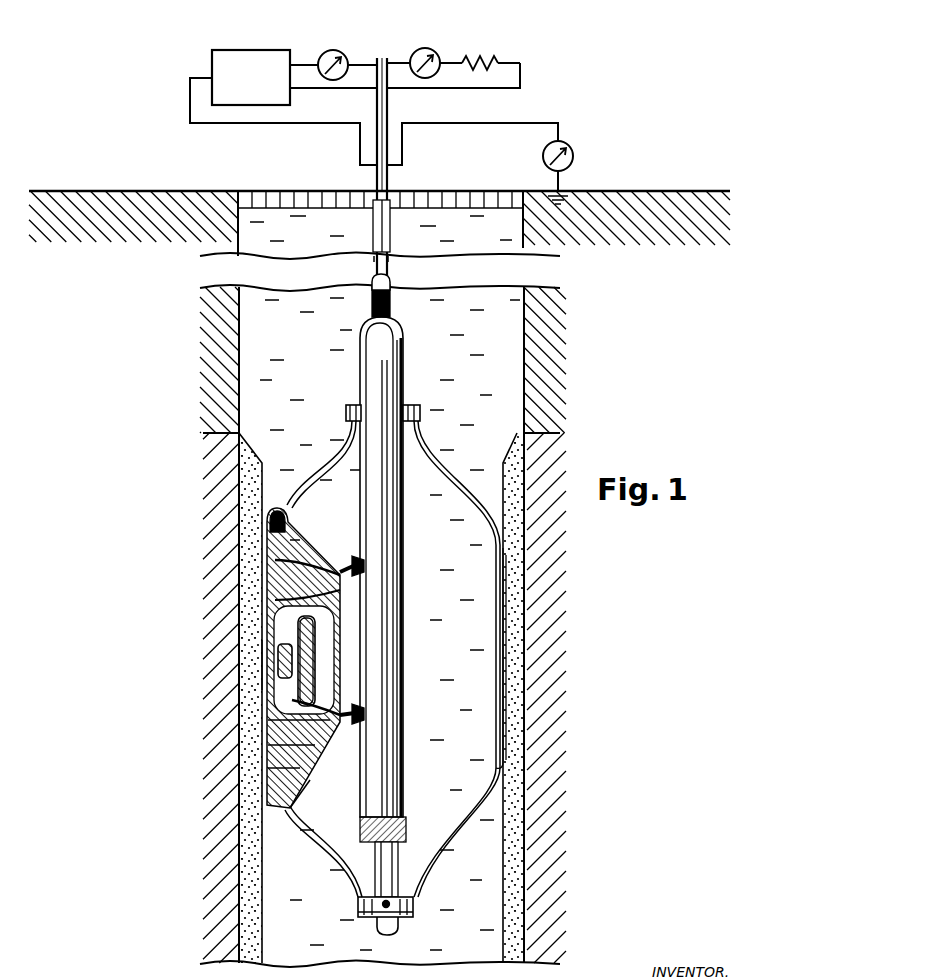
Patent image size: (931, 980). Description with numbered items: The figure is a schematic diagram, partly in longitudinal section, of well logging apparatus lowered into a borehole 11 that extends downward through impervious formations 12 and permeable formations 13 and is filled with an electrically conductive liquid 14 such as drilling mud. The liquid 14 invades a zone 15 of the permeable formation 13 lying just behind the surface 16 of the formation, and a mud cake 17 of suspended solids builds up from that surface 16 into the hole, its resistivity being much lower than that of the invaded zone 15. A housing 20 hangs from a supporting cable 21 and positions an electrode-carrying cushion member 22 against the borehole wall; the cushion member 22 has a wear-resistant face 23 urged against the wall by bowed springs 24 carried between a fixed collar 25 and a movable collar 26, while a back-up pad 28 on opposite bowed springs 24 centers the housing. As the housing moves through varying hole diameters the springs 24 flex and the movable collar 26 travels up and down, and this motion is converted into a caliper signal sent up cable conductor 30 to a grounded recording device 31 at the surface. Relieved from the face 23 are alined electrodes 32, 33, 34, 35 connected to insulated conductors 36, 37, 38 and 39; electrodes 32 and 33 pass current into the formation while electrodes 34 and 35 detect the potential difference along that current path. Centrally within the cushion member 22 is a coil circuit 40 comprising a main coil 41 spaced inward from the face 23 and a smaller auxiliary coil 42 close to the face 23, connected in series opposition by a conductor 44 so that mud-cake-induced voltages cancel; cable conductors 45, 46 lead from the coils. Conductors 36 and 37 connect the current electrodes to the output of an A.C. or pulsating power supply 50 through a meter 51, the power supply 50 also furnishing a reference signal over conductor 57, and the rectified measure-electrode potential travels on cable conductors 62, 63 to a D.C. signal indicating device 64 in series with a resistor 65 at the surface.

The borehole 11 is at (515, 332).
The impervious formations 12 is at (210, 368).
The permeable formations 13 is at (210, 524).
The electrically conductive liquid 14 is at (276, 342).
The invaded zone 15 is at (215, 700).
The surface of the formation 16 is at (266, 668).
The mud cake 17 is at (268, 950).
The housing 20 is at (404, 358).
The supporting cable 21 is at (393, 236).
The cushion member 22 is at (290, 536).
The wear-resistant face 23 is at (275, 719).
The bowed springs 24 is at (462, 490).
The fixed collar 25 is at (346, 410).
The movable collar 26 is at (356, 908).
The back-up pad 28 is at (494, 632).
The cable conductor 30 is at (440, 123).
The recording device 31 is at (576, 157).
The electrode 32 is at (275, 606).
The electrode 33 is at (275, 745).
The electrode 34 is at (275, 582).
The electrode 35 is at (275, 766).
The insulated conductor 36 is at (344, 88).
The insulated conductor 37 is at (362, 63).
The insulated conductor 38 is at (356, 560).
The insulated conductor 39 is at (318, 782).
The coil circuit 40 is at (322, 672).
The main coil 41 is at (318, 652).
The auxiliary coil 42 is at (272, 642).
The conductor 44 is at (322, 630).
The cable conductor 45 is at (332, 712).
The cable conductor 46 is at (336, 728).
The power supply 50 is at (240, 50).
The meter 51 is at (333, 50).
The conductor 57 is at (250, 123).
The cable conductor 62 is at (389, 63).
The cable conductor 63 is at (438, 88).
The D.C. signal indicating device 64 is at (430, 48).
The resistor 65 is at (488, 58).